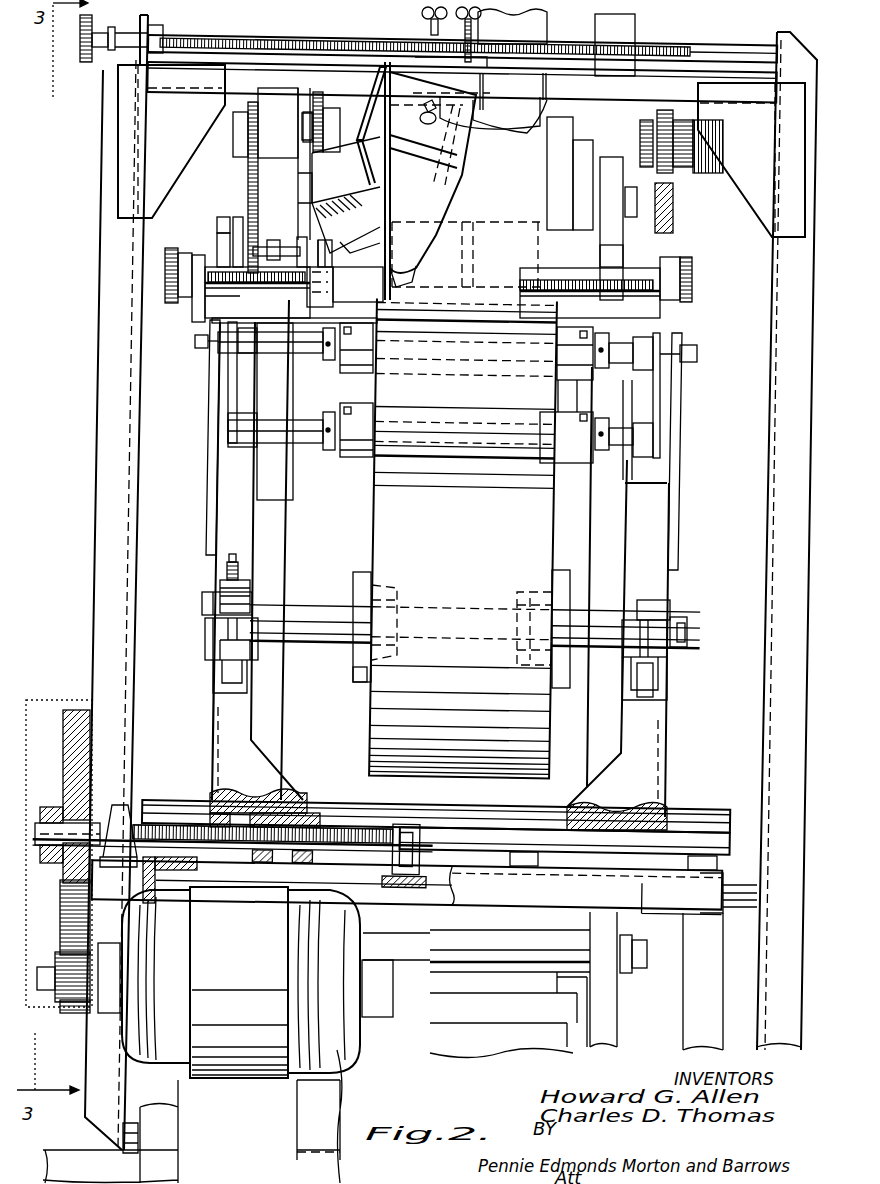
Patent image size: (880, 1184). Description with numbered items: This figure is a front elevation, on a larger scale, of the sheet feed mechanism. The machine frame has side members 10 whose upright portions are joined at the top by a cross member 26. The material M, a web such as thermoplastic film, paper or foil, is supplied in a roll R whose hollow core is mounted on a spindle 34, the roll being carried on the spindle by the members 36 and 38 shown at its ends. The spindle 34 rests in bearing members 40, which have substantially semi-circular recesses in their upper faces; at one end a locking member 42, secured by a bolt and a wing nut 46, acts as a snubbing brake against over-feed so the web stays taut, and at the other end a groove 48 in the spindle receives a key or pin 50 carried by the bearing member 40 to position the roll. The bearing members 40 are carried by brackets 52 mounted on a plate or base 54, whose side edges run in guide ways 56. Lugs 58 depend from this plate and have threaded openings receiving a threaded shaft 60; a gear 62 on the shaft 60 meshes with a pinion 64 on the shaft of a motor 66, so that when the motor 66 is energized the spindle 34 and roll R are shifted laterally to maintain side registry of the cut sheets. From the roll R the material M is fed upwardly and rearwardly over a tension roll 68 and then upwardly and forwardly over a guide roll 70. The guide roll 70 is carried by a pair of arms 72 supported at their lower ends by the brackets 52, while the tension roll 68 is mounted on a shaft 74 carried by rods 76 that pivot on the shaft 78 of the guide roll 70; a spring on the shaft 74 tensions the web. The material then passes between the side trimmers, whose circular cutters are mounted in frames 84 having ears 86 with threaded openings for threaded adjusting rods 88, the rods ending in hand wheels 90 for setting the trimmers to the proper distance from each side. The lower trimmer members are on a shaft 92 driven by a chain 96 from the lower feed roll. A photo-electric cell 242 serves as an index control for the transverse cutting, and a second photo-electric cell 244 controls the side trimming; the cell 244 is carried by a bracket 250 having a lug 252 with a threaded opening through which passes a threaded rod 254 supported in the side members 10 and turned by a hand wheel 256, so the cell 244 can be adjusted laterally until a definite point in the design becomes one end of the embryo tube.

The side members 10 is at (106, 535).
The cross member 26 is at (685, 82).
The spindle 34 is at (328, 641).
The bracket 36 is at (358, 568).
The pulley 38 is at (390, 589).
The bearing members 40 is at (215, 677).
The locking member 42 is at (213, 583).
The wing nut 46 is at (232, 562).
The groove 48 is at (670, 601).
The key or pin 50 is at (667, 681).
The brackets 52 is at (223, 528).
The plate or base 54 is at (683, 815).
The guide ways 56 is at (712, 824).
The lugs 58 is at (300, 860).
The threaded shaft 60 is at (182, 826).
The gear 62 is at (62, 906).
The pinion 64 is at (70, 1001).
The motor 66 is at (245, 982).
The tension roll 68 is at (357, 463).
The guide roll 70 is at (358, 366).
The arms 72 is at (210, 438).
The shaft 74 is at (313, 443).
The rods 76 is at (235, 390).
The shaft 78 is at (315, 355).
The frames 84 is at (312, 230).
The ears 86 is at (330, 292).
The threaded adjusting rods 88 is at (426, 291).
The hand wheels 90 is at (172, 306).
The shaft 92 is at (282, 249).
The chain 96 is at (246, 184).
The photo-electric cell 242 is at (524, 33).
The photo-electric cell 244 is at (437, 197).
The bracket 250 is at (390, 62).
The lug 252 is at (424, 19).
The threaded rod or shaft 254 is at (303, 36).
The hand wheel 256 is at (86, 62).
The material M is at (540, 518).
The roll R is at (372, 743).